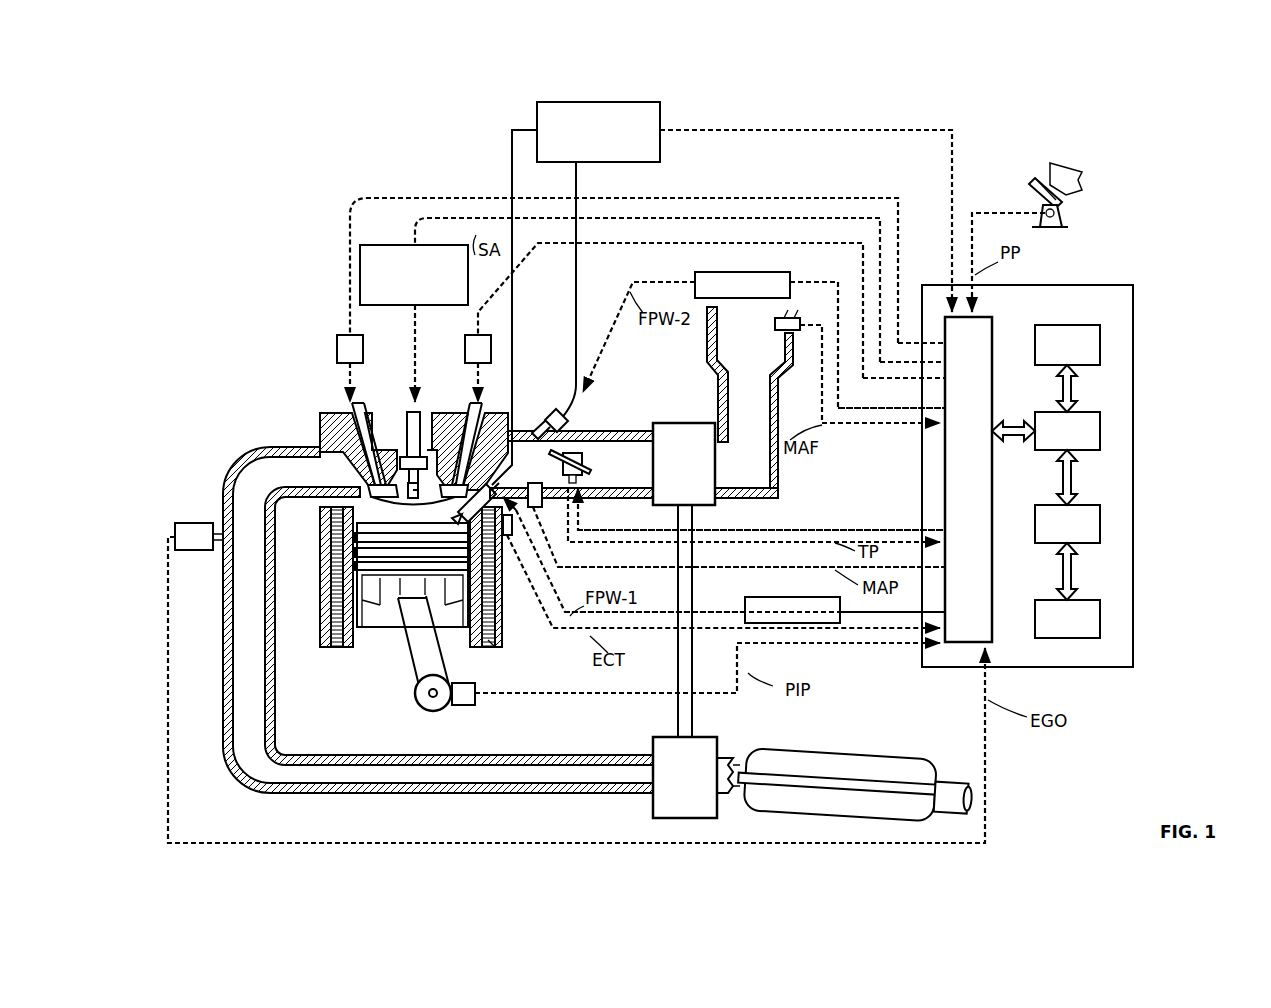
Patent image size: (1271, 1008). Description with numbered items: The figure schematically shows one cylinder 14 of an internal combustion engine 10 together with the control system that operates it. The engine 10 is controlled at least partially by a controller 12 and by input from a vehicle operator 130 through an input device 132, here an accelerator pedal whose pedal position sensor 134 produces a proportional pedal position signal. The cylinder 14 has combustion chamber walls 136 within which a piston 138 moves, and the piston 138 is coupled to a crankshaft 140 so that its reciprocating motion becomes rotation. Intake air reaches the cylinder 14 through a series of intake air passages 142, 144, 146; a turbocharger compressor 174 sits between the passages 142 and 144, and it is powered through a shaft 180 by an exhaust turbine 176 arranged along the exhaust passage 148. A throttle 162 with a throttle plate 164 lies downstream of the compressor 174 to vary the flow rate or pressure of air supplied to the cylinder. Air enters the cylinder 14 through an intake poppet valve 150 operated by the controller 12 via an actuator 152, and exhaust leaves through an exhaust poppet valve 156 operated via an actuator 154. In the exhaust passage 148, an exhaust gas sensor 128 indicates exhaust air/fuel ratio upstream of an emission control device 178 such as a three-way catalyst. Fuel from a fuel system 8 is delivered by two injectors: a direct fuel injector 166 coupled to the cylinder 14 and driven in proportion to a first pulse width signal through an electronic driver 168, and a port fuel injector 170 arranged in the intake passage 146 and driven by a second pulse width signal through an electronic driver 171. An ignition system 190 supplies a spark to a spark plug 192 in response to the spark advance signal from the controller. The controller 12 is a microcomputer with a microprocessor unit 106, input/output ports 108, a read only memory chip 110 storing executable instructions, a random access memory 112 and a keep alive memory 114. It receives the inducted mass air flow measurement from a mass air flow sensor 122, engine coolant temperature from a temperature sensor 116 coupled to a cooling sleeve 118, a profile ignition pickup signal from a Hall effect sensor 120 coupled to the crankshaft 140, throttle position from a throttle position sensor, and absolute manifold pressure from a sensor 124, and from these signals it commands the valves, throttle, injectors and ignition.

The fuel system 8 is at (628, 102).
The internal combustion engine 10 is at (258, 373).
The controller 12 is at (1133, 290).
The cylinder 14 is at (320, 538).
The microprocessor unit 106 is at (1100, 425).
The input/output ports 108 is at (992, 320).
The read only memory chip 110 is at (1100, 338).
The random access memory 112 is at (1100, 522).
The keep alive memory 114 is at (1100, 617).
The temperature sensor 116 is at (508, 540).
The cooling sleeve 118 is at (490, 610).
The Hall effect sensor 120 is at (463, 707).
The mass air flow sensor 122 is at (857, 356).
The manifold pressure sensor 124 is at (540, 512).
The exhaust gas sensor 128 is at (175, 530).
The vehicle operator 130 is at (1068, 229).
The input device 132 is at (1032, 190).
The pedal position sensor 134 is at (1064, 212).
The combustion chamber walls 136 is at (357, 645).
The piston 138 is at (403, 625).
The crankshaft 140 is at (420, 707).
The intake air passage 142 is at (750, 397).
The intake air passage 144 is at (643, 464).
The intake air passage 146 is at (571, 476).
The exhaust passage 148 is at (438, 620).
The intake poppet valve 150 is at (456, 468).
The actuator 152 is at (465, 350).
The actuator 154 is at (337, 345).
The exhaust poppet valve 156 is at (362, 468).
The throttle 162 is at (570, 452).
The throttle plate 164 is at (552, 448).
The fuel injector 166 is at (598, 543).
The electronic driver 168 is at (745, 600).
The fuel injector 170 is at (557, 412).
The electronic driver 171 is at (696, 274).
The compressor 174 is at (665, 422).
The exhaust turbine 176 is at (653, 812).
The emission control device 178 is at (905, 752).
The shaft 180 is at (695, 712).
The ignition system 190 is at (375, 245).
The spark plug 192 is at (410, 445).